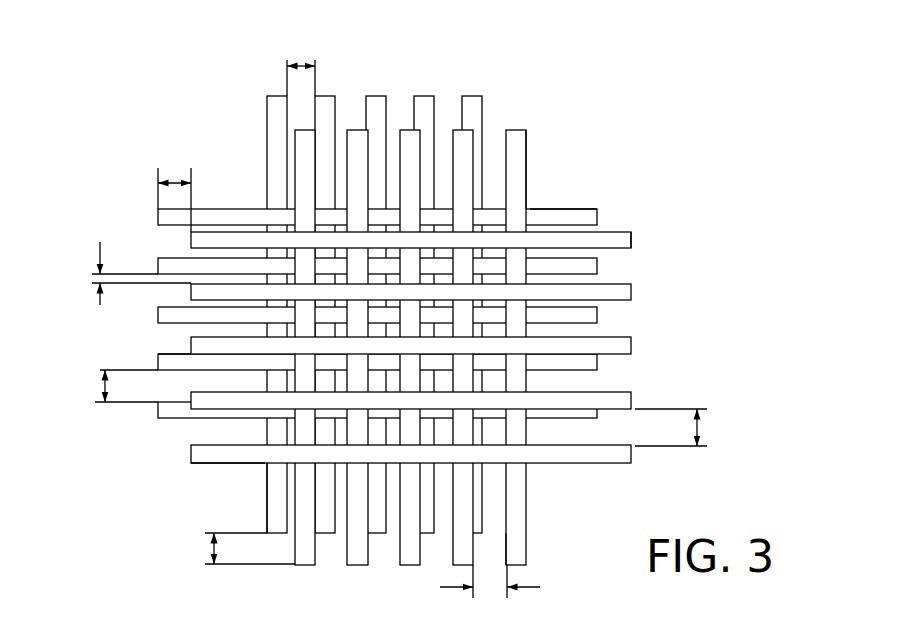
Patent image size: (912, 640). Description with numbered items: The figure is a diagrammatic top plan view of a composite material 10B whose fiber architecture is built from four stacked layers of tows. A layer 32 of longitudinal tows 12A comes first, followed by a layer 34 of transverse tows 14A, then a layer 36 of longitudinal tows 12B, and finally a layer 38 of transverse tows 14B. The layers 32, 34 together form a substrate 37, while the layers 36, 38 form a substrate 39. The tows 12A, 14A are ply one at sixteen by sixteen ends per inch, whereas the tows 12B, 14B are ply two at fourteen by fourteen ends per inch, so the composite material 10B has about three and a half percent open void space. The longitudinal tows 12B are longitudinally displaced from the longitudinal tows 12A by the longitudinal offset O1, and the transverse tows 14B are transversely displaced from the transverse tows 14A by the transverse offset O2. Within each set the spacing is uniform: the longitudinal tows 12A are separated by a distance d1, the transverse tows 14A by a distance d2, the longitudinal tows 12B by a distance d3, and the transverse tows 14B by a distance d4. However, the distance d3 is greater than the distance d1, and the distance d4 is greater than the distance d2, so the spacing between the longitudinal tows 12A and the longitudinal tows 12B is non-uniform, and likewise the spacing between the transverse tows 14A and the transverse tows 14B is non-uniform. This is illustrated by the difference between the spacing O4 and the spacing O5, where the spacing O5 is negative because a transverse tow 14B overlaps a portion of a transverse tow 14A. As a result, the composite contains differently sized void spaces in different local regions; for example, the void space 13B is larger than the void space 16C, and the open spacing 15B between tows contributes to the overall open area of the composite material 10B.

The composite material 10B is at (385, 296).
The longitudinal tows 12A is at (472, 95).
The longitudinal tows 12B is at (514, 129).
The void space 13B is at (440, 435).
The transverse tows 14A is at (160, 217).
The transverse tows 14B is at (190, 455).
The void space 15B is at (593, 335).
The void space 16C is at (340, 247).
The layer 32 is at (257, 491).
The layer 34 is at (569, 196).
The layer 36 is at (539, 548).
The substrate 37 is at (207, 481).
The layer 38 is at (646, 240).
The substrate 39 is at (541, 148).
The distance d1 is at (301, 62).
The distance d2 is at (100, 387).
The distance d3 is at (442, 588).
The distance d4 is at (700, 427).
The longitudinal offset O1 is at (207, 548).
The transverse offset O2 is at (183, 178).
The spacing O4 is at (98, 245).
The spacing O5 is at (189, 357).